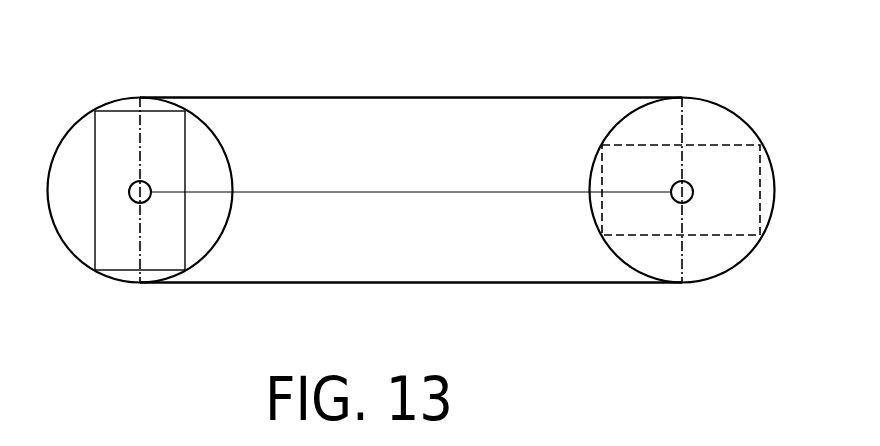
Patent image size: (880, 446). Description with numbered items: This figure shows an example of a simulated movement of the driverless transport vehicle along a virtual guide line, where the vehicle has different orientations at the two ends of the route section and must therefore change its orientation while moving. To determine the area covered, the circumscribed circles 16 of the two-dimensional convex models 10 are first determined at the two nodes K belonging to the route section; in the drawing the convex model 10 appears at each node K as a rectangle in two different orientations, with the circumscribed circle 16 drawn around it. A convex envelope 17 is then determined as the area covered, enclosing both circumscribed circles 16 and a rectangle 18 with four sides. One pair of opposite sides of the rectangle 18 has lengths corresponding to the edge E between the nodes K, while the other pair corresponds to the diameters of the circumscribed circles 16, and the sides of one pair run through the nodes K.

The two-dimensional convex model 10 is at (411, 180).
The circumscribed circle 16 is at (204, 222).
The convex envelope 17 is at (411, 192).
The rectangle 18 is at (417, 253).
The node K is at (131, 197).
The edge E is at (395, 192).